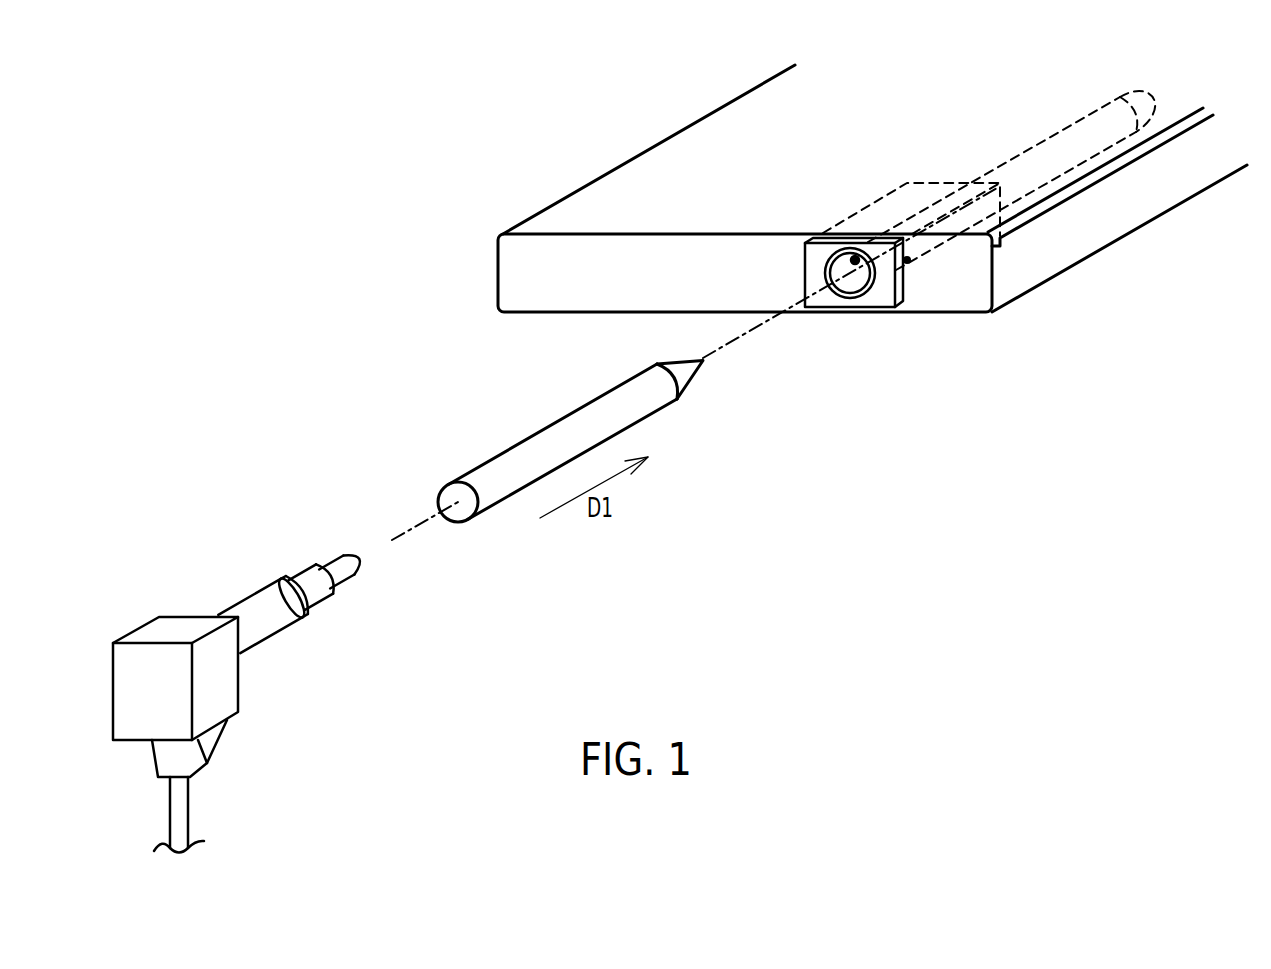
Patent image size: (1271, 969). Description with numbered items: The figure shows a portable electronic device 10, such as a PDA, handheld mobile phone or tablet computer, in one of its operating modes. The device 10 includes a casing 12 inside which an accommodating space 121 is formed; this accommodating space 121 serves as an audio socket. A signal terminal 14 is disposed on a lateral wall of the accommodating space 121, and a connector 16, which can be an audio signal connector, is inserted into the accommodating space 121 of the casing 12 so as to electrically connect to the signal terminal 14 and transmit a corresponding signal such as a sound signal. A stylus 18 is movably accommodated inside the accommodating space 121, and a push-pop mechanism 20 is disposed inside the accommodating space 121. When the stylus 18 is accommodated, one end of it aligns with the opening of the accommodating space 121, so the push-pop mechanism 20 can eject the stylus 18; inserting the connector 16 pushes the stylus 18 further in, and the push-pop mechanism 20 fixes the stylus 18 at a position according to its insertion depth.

The portable electronic device 10 is at (550, 136).
The casing 12 is at (527, 277).
The accommodating space 121 is at (837, 297).
The signal terminal 14 is at (907, 264).
The connector 16 is at (280, 622).
The stylus 18 is at (508, 472).
The push-pop mechanism 20 is at (955, 267).